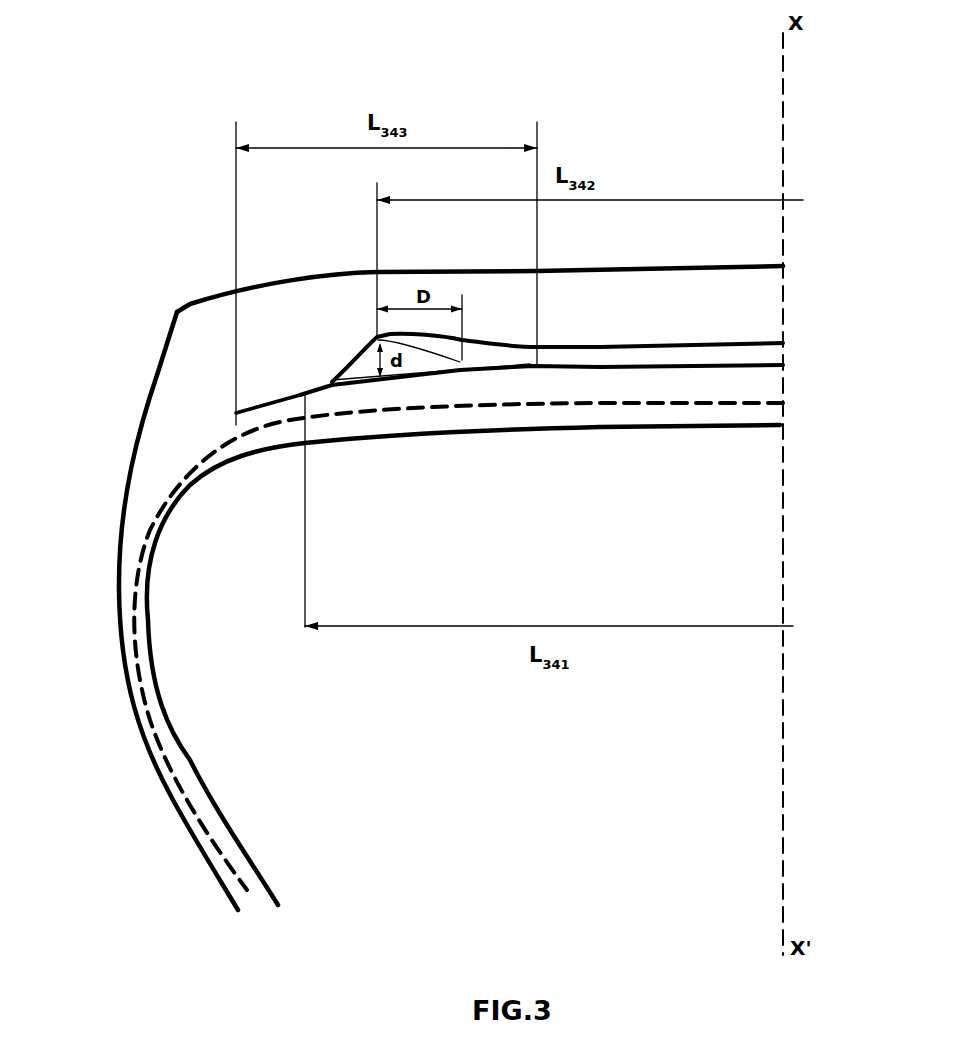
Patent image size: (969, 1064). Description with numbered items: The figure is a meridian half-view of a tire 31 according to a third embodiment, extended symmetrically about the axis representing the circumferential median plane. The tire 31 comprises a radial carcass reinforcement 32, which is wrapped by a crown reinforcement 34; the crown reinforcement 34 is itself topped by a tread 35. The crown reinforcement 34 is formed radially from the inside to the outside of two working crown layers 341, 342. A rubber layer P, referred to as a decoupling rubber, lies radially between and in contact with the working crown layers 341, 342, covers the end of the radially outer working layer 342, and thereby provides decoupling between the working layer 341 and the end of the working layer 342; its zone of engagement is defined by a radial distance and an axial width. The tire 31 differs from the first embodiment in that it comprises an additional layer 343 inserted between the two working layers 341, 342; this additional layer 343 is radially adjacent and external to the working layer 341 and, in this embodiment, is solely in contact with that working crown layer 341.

The tire 31 is at (84, 272).
The carcass reinforcement 32 is at (147, 530).
The crown reinforcement 34 is at (513, 556).
The tread 35 is at (686, 282).
The working crown layer 341 is at (647, 368).
The working crown layer 342 is at (700, 343).
The additional layer 343 is at (297, 395).
The rubber layer P is at (422, 363).